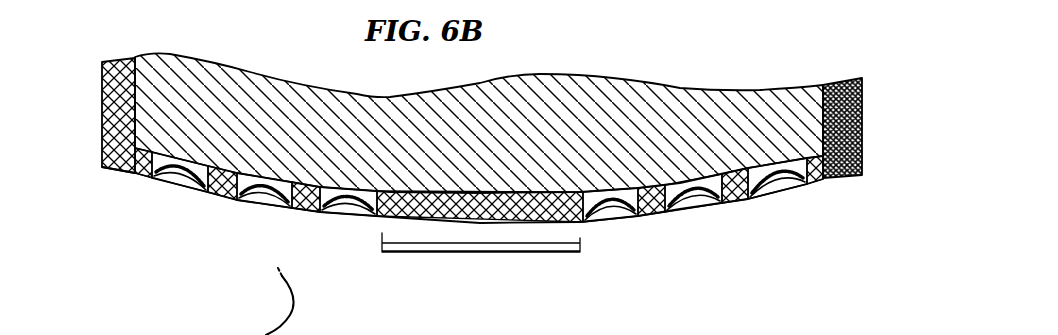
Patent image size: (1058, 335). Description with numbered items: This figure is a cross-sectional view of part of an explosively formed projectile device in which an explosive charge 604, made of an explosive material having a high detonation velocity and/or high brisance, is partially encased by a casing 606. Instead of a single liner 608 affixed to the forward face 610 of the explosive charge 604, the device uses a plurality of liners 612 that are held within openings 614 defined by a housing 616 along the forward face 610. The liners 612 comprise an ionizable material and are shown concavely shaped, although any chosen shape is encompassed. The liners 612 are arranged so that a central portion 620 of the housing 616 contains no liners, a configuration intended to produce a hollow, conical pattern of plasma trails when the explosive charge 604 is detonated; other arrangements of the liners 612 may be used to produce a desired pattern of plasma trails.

The explosive charge 604 is at (587, 97).
The casing 606 is at (853, 178).
The liner 608 is at (748, 202).
The forward face 610 is at (732, 178).
The liners 612 is at (693, 204).
The openings 614 is at (793, 158).
The housing 616 is at (825, 183).
The central portion 620 is at (527, 252).